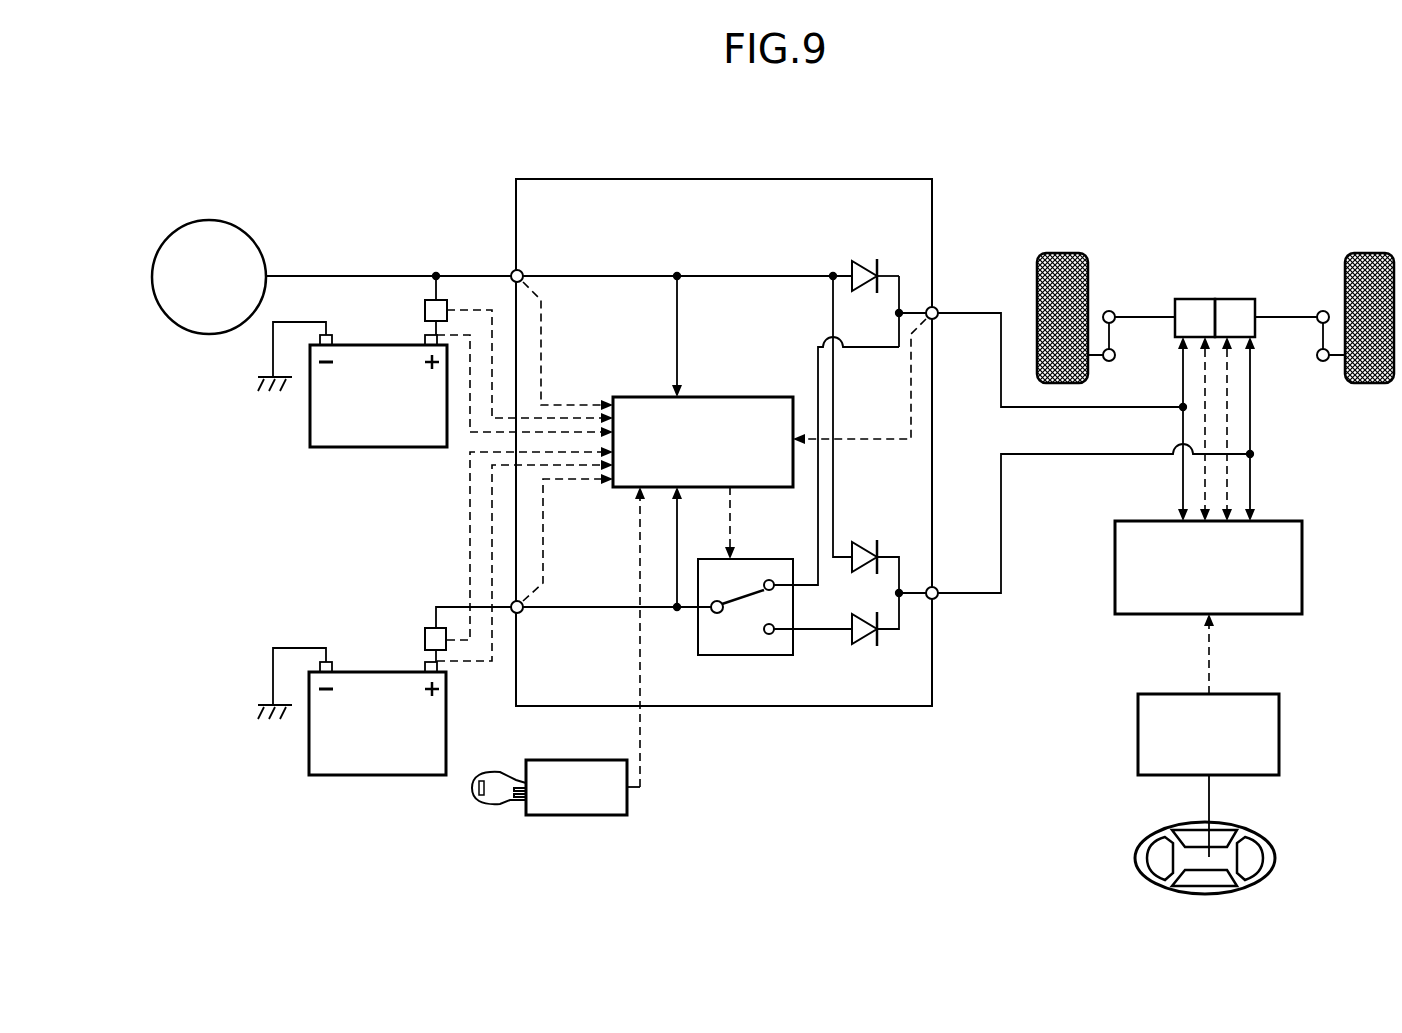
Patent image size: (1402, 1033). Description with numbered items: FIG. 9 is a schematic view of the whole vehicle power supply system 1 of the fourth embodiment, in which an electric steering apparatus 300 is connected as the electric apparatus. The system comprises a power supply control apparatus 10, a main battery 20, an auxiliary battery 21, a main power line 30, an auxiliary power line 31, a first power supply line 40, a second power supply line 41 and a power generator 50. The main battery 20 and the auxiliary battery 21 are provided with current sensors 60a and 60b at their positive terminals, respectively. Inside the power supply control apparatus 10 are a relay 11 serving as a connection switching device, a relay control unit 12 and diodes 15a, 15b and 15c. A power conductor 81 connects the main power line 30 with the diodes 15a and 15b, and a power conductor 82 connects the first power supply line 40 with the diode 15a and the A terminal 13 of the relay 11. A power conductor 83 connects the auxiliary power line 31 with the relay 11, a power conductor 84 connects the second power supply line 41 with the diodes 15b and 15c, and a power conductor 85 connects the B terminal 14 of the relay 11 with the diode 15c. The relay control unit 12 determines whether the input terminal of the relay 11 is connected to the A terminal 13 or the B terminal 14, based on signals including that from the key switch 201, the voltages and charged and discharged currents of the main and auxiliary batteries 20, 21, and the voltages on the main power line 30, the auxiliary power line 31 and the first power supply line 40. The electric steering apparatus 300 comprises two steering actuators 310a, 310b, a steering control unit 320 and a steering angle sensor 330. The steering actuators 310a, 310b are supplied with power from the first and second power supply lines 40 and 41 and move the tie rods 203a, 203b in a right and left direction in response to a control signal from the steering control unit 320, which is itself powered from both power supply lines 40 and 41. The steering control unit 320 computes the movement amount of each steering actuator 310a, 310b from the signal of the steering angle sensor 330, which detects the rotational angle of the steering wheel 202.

The vehicle power supply system 1 is at (664, 171).
The power supply control apparatus 10 is at (828, 181).
The relay 11 is at (708, 559).
The relay control unit 12 is at (734, 397).
The A terminal 13 is at (772, 580).
The B terminal 14 is at (771, 634).
The diode 15a is at (852, 269).
The diode 15b is at (860, 548).
The diode 15c is at (866, 646).
The main battery 20 is at (378, 447).
The auxiliary battery 21 is at (378, 775).
The main power line 30 is at (465, 276).
The auxiliary power line 31 is at (452, 607).
The first power supply line 40 is at (964, 313).
The second power supply line 41 is at (965, 600).
The power generator 50 is at (208, 221).
The current sensor 60a is at (425, 310).
The current sensor 60b is at (425, 638).
The power conductor 81 is at (786, 280).
The power conductor 82 is at (868, 352).
The power conductor 83 is at (550, 612).
The power conductor 84 is at (912, 598).
The power conductor 85 is at (824, 632).
The key switch 201 is at (578, 817).
The steering wheel 202 is at (1276, 862).
The tie rod 203a is at (1168, 287).
The tie rod 203b is at (1289, 323).
The electric steering apparatus 300 is at (1218, 190).
The steering actuator 310a is at (1197, 299).
The steering actuator 310b is at (1258, 284).
The steering control unit 320 is at (1302, 568).
The steering angle sensor 330 is at (1279, 736).